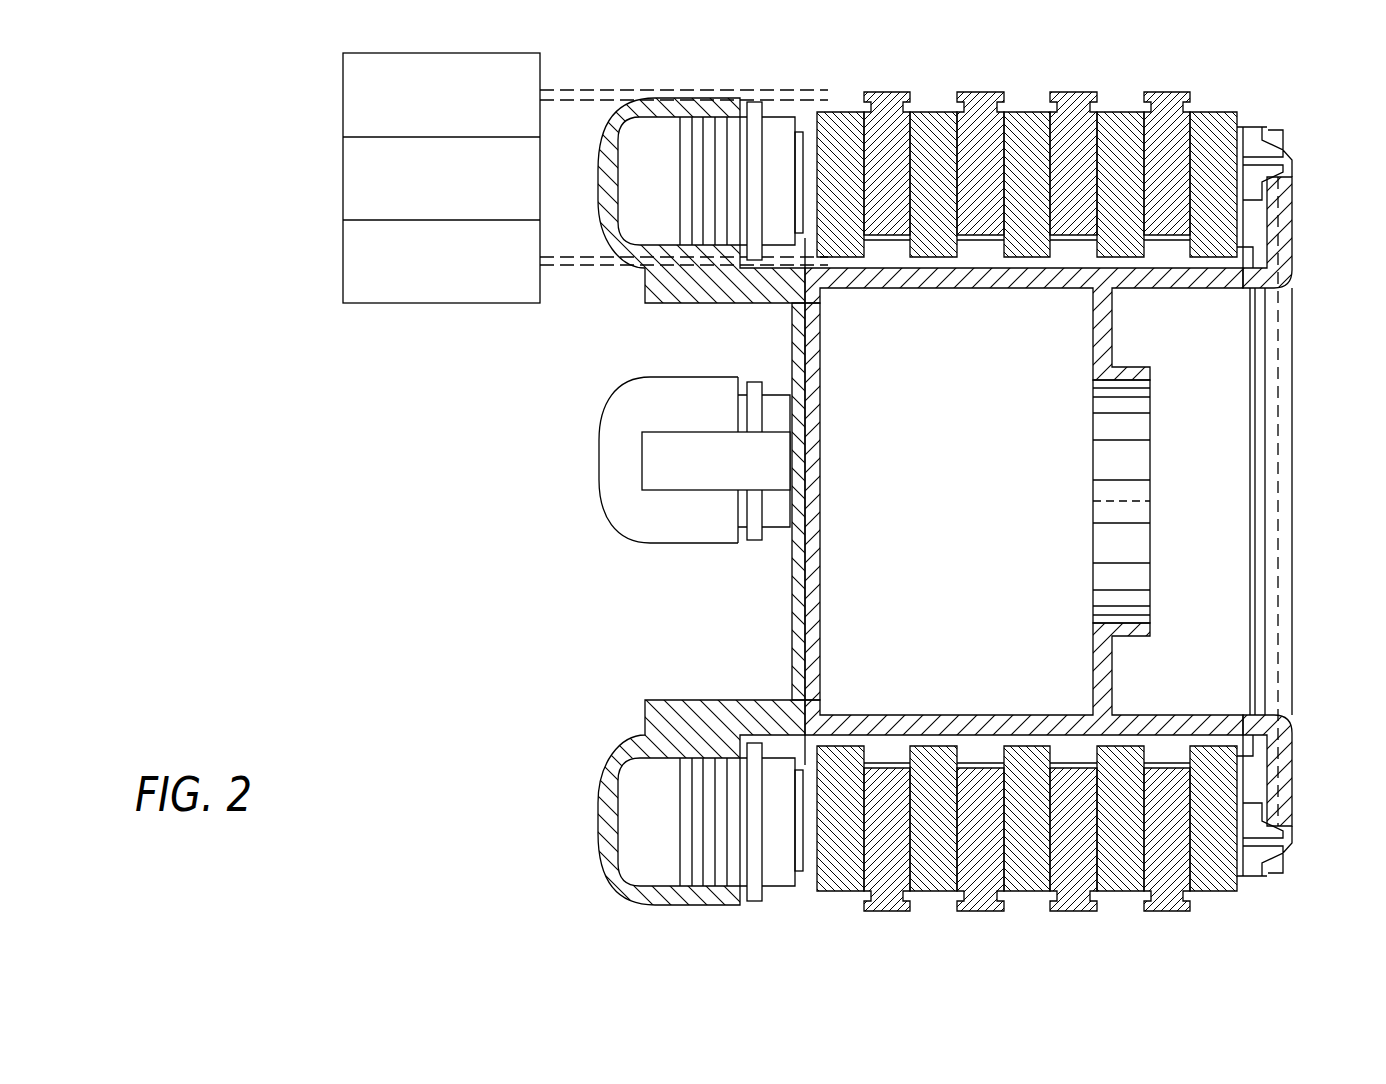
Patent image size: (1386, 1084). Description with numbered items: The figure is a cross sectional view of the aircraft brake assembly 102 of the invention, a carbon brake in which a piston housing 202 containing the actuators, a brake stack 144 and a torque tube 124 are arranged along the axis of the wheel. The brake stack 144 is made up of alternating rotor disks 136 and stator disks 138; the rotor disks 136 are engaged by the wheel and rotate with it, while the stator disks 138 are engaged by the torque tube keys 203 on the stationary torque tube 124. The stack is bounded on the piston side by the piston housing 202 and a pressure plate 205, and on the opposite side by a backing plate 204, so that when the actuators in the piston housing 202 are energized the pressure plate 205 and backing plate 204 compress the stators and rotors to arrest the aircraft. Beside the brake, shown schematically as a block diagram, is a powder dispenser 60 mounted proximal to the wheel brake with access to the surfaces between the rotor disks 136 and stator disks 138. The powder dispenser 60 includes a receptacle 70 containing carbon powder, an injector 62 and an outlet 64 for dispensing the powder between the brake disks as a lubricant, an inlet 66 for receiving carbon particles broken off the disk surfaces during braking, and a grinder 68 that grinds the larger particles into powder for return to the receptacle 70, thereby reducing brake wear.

The powder dispenser 60 is at (255, 53).
The injector 62 is at (343, 288).
The outlet 64 is at (573, 265).
The inlet 66 is at (560, 93).
The grinder 68 is at (343, 100).
The receptacle 70 is at (343, 195).
The aircraft brake assembly 102 is at (525, 613).
The torque tube 124 is at (1302, 375).
The rotor disks 136 is at (885, 93).
The stator disks 138 is at (933, 112).
The brake stack 144 is at (1235, 903).
The piston housing 202 is at (803, 903).
The torque tube keys 203 is at (1167, 748).
The backing plate 204 is at (1215, 108).
The pressure plate 205 is at (840, 112).